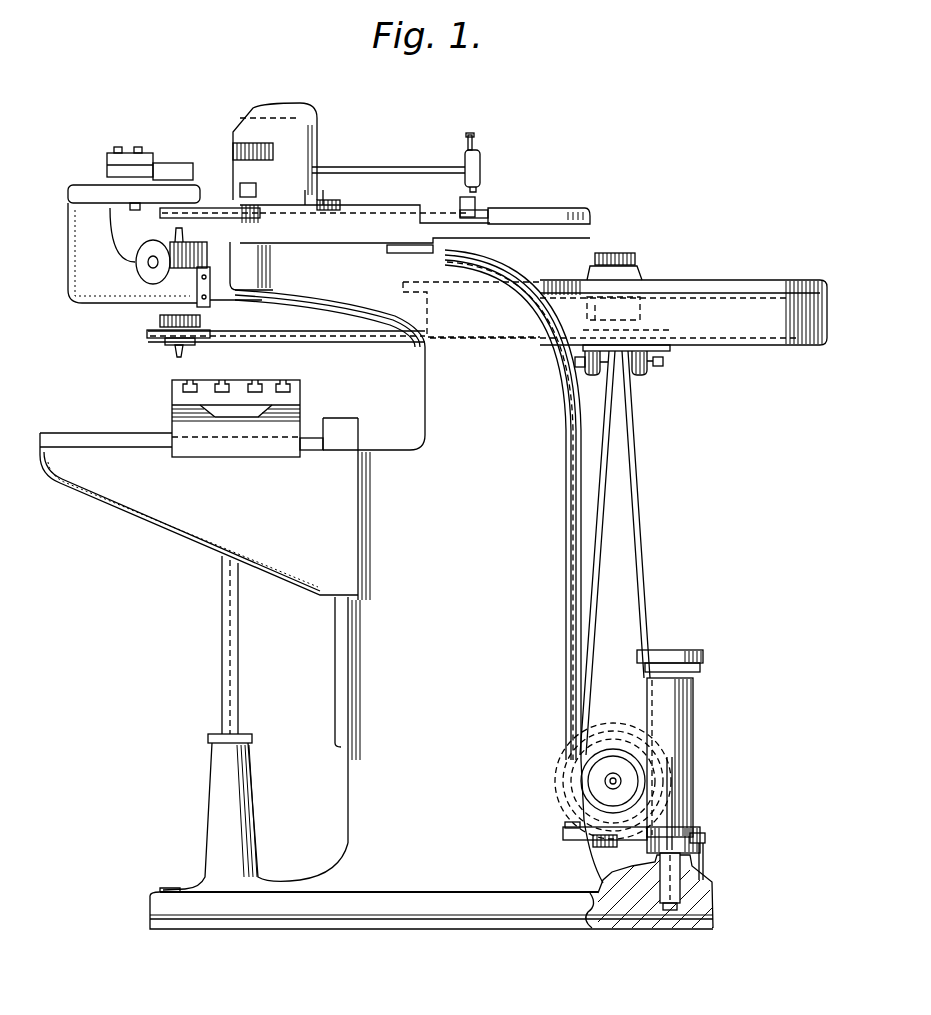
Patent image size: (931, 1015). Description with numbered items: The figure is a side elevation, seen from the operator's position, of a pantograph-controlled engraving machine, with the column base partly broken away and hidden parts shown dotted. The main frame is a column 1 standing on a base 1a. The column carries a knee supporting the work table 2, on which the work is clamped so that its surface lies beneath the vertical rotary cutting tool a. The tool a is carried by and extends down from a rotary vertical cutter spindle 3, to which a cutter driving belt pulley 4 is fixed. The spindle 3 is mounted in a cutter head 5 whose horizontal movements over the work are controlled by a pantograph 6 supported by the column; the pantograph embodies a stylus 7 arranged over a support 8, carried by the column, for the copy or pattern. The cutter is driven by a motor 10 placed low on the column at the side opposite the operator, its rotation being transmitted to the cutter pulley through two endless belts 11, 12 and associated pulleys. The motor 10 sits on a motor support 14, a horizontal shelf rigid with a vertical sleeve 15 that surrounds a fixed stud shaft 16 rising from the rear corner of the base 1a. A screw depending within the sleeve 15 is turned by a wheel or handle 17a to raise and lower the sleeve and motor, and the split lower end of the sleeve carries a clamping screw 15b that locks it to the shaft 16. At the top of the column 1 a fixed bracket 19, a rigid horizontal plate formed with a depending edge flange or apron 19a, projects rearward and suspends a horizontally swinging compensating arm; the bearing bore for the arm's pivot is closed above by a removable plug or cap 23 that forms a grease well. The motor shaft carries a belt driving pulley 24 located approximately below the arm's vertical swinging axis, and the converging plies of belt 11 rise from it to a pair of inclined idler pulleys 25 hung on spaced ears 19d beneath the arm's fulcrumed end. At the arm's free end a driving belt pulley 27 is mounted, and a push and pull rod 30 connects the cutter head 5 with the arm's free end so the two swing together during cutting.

The column 1 is at (376, 589).
The base 1a is at (700, 905).
The work table 2 is at (271, 380).
The cutter spindle 3 is at (177, 361).
The cutter driving belt pulley 4 is at (198, 338).
The cutter head 5 is at (193, 293).
The pantograph 6 is at (240, 150).
The stylus 7 is at (478, 182).
The support 8 is at (507, 210).
The motor 10 is at (612, 765).
The endless belt 11 is at (632, 542).
The endless belt 12 is at (365, 343).
The motor support 14 is at (620, 842).
The sleeve 15 is at (693, 718).
The clamping screw 15b is at (692, 832).
The stud shaft 16 is at (675, 880).
The wheel or handle 17a is at (704, 657).
The fixed bracket 19 is at (714, 281).
The edge flange or apron 19a is at (765, 345).
The ears 19d is at (650, 362).
The plug or cap 23 is at (627, 256).
The belt driving pulley 24 is at (598, 738).
The idler pulleys 25 is at (628, 378).
The driving belt pulley 27 is at (670, 333).
The push and pull rod 30 is at (273, 297).
The cutting tool a is at (178, 371).